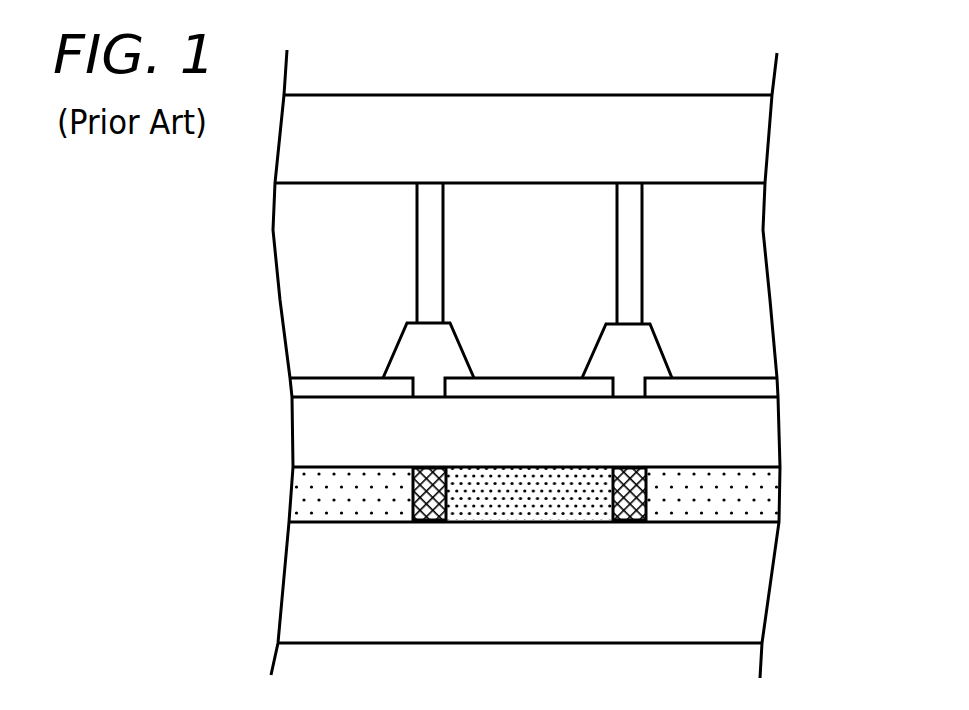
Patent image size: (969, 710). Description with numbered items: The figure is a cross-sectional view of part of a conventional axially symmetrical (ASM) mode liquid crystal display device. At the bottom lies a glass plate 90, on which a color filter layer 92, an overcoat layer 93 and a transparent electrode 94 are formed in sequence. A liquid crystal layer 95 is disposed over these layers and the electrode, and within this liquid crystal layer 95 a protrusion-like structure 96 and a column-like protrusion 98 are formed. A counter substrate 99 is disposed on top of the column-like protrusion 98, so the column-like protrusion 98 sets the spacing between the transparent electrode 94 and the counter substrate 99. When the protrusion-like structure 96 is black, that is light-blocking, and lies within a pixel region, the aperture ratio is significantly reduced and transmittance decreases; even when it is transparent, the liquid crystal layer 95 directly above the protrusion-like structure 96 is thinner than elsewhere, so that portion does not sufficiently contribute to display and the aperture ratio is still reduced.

The glass plate 90 is at (758, 598).
The color filter layer 92 is at (770, 495).
The overcoat layer 93 is at (770, 435).
The transparent electrode 94 is at (768, 390).
The liquid crystal layer 95 is at (285, 278).
The protrusion-like structure 96 is at (650, 352).
The column-like protrusion 98 is at (628, 238).
The counter substrate 99 is at (738, 153).